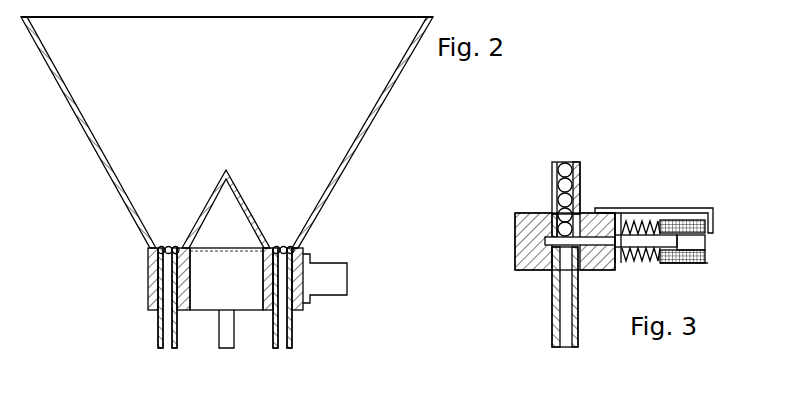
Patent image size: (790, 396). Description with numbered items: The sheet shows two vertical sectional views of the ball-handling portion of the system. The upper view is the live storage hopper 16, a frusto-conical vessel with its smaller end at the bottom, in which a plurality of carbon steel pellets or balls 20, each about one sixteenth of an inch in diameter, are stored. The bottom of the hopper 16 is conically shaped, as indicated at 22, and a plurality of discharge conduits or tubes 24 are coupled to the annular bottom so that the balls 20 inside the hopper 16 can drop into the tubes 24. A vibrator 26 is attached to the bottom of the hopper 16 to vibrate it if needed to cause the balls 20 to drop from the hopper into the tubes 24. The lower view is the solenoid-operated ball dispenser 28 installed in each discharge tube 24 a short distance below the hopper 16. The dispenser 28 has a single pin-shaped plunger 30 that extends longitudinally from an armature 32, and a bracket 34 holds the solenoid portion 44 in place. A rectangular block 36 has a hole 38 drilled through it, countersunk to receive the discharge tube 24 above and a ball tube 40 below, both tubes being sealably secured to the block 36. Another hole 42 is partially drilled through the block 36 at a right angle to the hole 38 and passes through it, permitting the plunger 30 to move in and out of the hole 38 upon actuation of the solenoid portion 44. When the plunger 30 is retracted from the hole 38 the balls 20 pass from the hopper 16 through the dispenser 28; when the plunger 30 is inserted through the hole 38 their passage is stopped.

In FIG. 2, the live storage hopper 16 is at (388, 94).
In FIG. 2, the balls 20 is at (279, 247).
In FIG. 3, the balls 20 is at (566, 166).
In FIG. 2, the conically shaped bottom 22 is at (247, 217).
In FIG. 2, the discharge tubes 24 is at (273, 342).
In FIG. 3, the discharge tubes 24 is at (578, 173).
In FIG. 2, the vibrator 26 is at (348, 280).
In FIG. 3, the ball dispenser 28 is at (640, 299).
In FIG. 3, the plunger 30 is at (593, 209).
In FIG. 3, the armature 32 is at (642, 233).
In FIG. 3, the bracket 34 is at (667, 212).
In FIG. 3, the rectangular block 36 is at (518, 228).
In FIG. 3, the hole 38 is at (562, 248).
In FIG. 3, the ball tube 40 is at (552, 320).
In FIG. 3, the hole 42 is at (553, 227).
In FIG. 3, the solenoid portion 44 is at (680, 264).